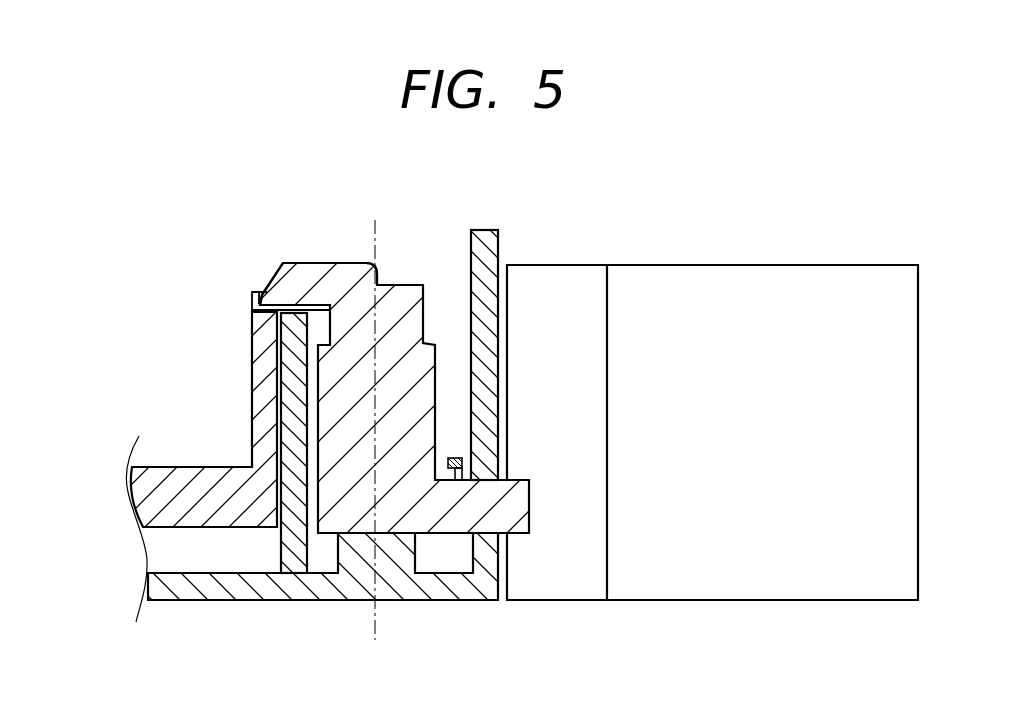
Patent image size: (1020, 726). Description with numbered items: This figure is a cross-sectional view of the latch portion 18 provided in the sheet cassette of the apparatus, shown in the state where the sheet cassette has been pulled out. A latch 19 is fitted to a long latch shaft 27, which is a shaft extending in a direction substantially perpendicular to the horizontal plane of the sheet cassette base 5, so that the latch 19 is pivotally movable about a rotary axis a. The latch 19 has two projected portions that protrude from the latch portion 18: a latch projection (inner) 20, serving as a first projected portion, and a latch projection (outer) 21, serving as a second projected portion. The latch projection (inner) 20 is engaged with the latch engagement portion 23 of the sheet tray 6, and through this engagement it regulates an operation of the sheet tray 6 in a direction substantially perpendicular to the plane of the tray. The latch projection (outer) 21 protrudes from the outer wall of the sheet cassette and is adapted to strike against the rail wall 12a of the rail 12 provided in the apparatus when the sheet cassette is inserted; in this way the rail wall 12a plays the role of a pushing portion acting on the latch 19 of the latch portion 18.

The sheet cassette base 5 is at (148, 590).
The sheet tray 6 is at (148, 498).
The rail 12 is at (720, 290).
The rail wall 12a is at (576, 572).
The latch portion 18 is at (495, 650).
The latch 19 is at (408, 296).
The latch projection (inner) 20 is at (296, 280).
The latch projection (outer) 21 is at (508, 512).
The latch engagement portion 23 is at (252, 295).
The latch shaft 27 is at (352, 555).
The rotary axis a is at (374, 417).